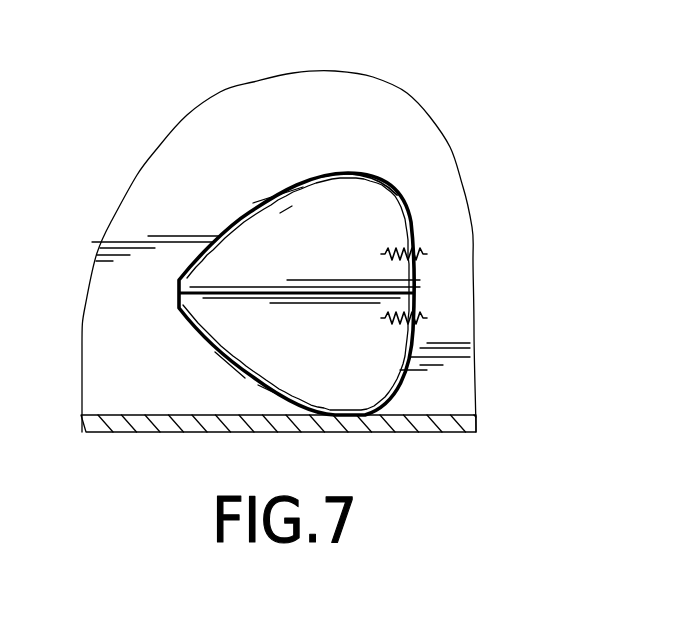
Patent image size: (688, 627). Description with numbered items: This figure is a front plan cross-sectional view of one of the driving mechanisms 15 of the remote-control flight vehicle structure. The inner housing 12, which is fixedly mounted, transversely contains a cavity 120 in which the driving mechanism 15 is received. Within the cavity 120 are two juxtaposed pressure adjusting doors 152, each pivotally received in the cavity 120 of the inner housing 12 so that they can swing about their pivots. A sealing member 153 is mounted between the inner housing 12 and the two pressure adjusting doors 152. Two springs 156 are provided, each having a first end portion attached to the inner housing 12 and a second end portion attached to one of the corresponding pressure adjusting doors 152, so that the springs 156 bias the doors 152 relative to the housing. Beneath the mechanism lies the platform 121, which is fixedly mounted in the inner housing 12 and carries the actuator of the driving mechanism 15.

The inner housing 12 is at (333, 87).
The platform 121 is at (410, 426).
The driving mechanism 15 is at (425, 228).
The cavity 120 is at (366, 170).
The sealing member 153 is at (398, 197).
The pressure adjusting door 152 is at (240, 235).
The spring 156 is at (400, 260).